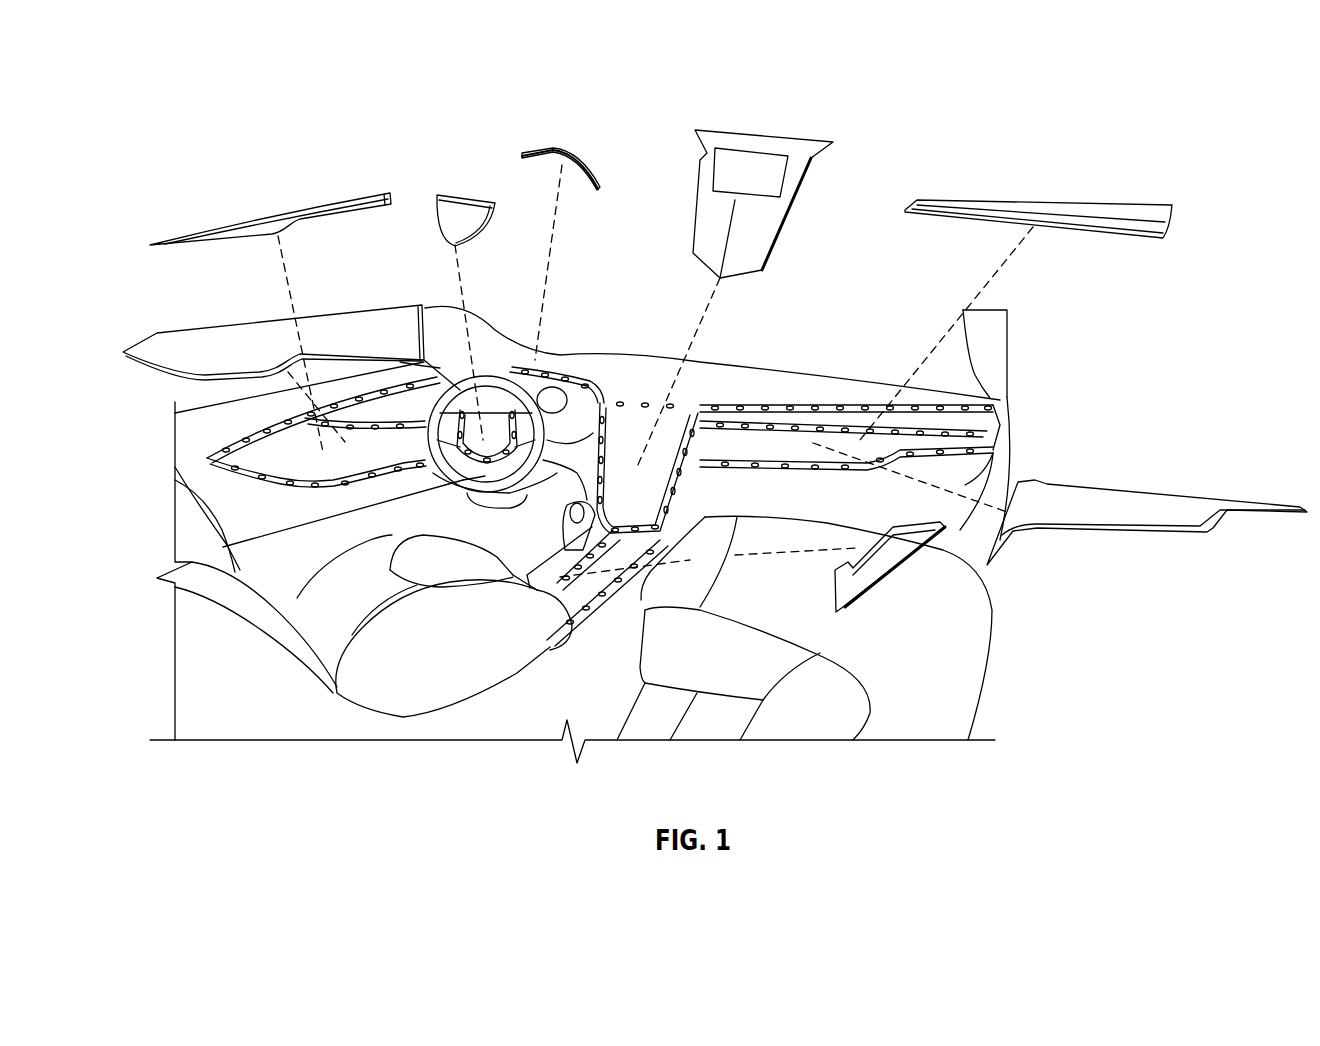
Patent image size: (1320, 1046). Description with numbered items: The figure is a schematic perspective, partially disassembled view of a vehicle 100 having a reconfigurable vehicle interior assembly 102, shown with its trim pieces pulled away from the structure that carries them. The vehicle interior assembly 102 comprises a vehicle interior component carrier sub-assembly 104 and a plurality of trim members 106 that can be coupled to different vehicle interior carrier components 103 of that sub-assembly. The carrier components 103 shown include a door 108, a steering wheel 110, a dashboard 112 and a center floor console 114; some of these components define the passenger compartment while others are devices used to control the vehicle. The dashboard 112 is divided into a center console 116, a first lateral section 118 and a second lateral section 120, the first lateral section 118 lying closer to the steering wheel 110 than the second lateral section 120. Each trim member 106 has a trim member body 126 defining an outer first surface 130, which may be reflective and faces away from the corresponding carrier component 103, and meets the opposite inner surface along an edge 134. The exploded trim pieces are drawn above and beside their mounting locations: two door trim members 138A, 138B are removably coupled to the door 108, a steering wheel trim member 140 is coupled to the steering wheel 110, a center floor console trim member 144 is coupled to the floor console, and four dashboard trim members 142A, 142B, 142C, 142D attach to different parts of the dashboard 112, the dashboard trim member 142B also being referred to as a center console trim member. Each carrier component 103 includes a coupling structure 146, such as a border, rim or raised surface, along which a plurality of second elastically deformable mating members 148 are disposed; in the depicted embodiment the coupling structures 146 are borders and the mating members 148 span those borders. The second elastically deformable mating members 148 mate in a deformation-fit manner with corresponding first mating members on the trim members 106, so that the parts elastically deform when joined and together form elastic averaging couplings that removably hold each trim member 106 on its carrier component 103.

The vehicle 100 is at (148, 85).
The vehicle interior assembly 102 is at (993, 693).
The vehicle interior carrier component 103 is at (223, 415).
The vehicle interior component carrier sub-assembly 104 is at (848, 353).
The trim member 106 is at (286, 215).
The door 108 is at (187, 433).
The steering wheel 110 is at (485, 440).
The dashboard 112 is at (625, 352).
The center floor console 114 is at (595, 603).
The center console 116 is at (700, 388).
The first lateral section 118 is at (573, 360).
The second lateral section 120 is at (866, 368).
The trim member body 126 is at (288, 212).
The first surface 130 is at (230, 230).
The edge 134 is at (182, 235).
The door trim member 138A is at (260, 213).
The door trim member 138B is at (210, 333).
The steering wheel trim member 140 is at (443, 193).
The dashboard trim member 142A is at (568, 155).
The dashboard trim member 142B is at (787, 147).
The dashboard trim member 142C is at (1017, 197).
The dashboard trim member 142D is at (1167, 533).
The center floor console trim member 144 is at (838, 576).
The coupling structure 146 is at (205, 455).
The second elastically deformable mating member 148 is at (290, 462).